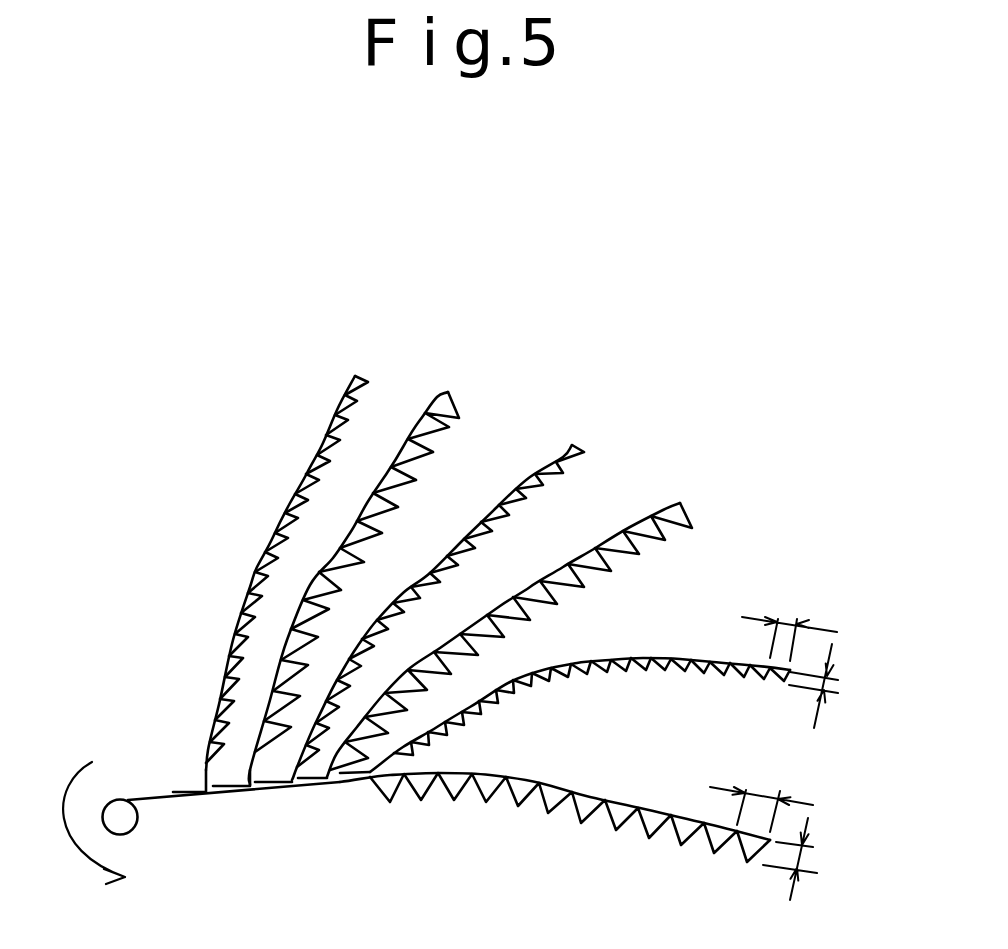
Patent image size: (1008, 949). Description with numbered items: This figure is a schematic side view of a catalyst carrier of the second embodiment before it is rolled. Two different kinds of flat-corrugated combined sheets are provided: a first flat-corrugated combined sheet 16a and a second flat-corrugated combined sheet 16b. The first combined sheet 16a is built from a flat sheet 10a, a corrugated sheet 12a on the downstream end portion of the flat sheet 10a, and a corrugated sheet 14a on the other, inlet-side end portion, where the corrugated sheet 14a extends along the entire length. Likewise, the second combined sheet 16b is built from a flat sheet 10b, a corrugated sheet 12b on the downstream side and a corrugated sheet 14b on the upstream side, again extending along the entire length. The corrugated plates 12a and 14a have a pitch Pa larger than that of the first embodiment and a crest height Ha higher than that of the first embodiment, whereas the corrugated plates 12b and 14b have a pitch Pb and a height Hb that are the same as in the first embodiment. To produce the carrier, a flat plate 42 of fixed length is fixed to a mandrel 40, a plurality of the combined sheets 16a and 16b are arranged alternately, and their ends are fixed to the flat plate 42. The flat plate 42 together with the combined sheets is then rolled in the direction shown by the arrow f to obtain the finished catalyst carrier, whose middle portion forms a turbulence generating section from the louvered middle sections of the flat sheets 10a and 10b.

The second flat-corrugated combined sheet 16b is at (472, 284).
The flat sheet 10b is at (332, 418).
The corrugated sheet 12b is at (337, 521).
The corrugated sheet 14b is at (347, 400).
The first flat-corrugated combined sheet 16a is at (737, 298).
The flat sheet 10a is at (436, 408).
The corrugated sheet 12a is at (492, 519).
The corrugated sheet 14a is at (460, 403).
The mandrel 40 is at (128, 835).
The flat plate 42 is at (160, 800).
The arrow f is at (76, 823).
The pitch Pb is at (783, 620).
The height Hb is at (838, 693).
The pitch Pa is at (760, 795).
The crest height Ha is at (823, 870).